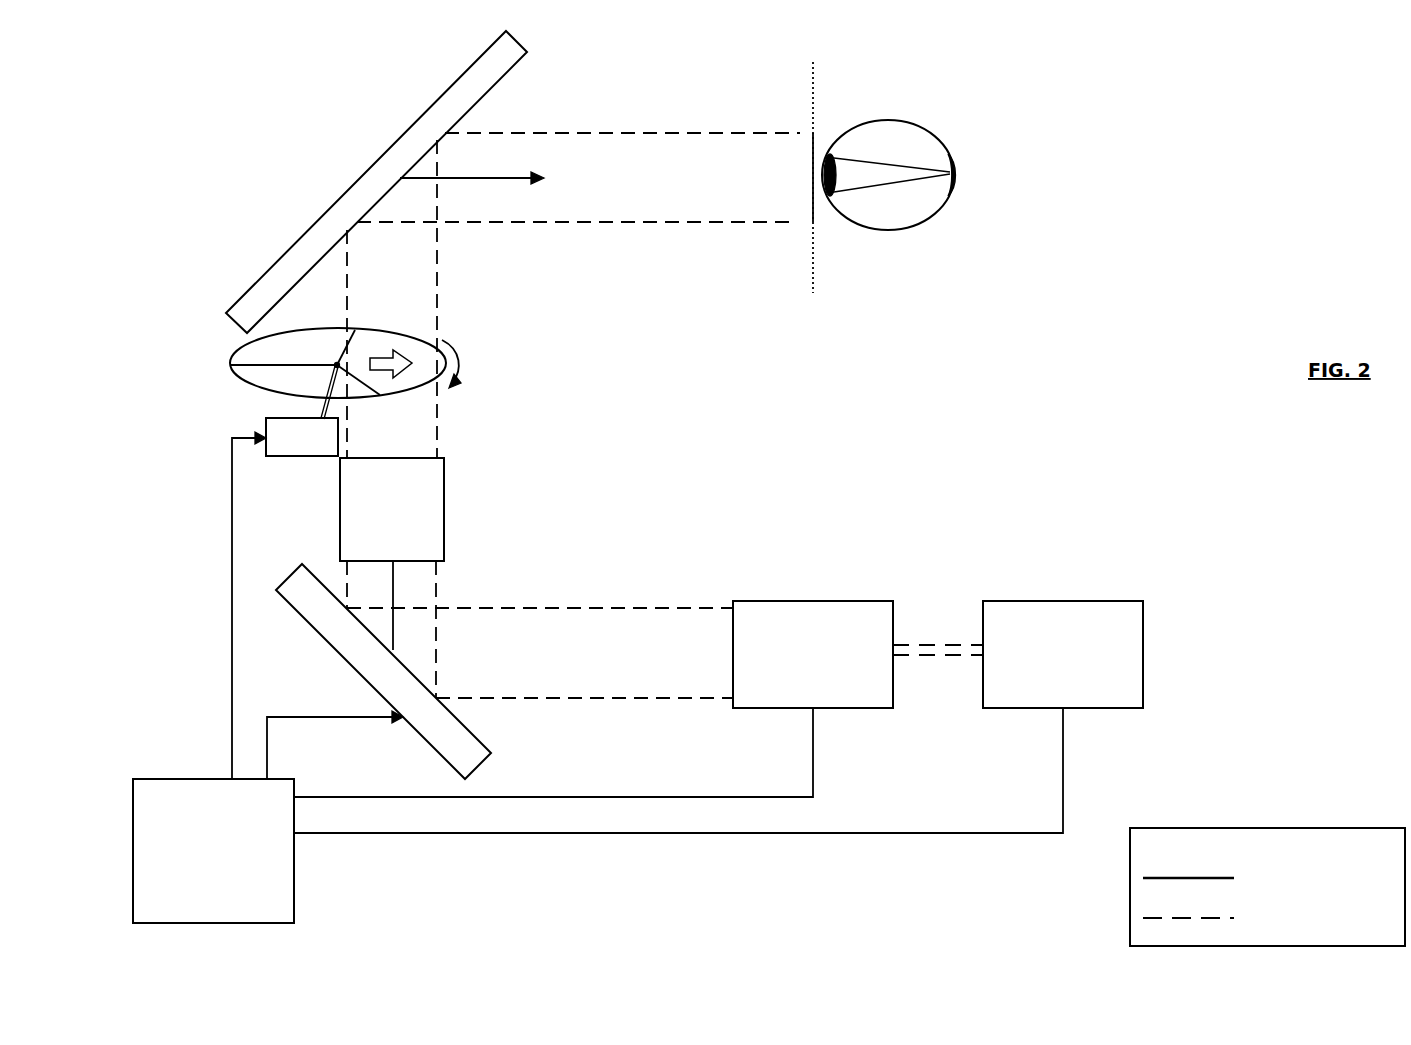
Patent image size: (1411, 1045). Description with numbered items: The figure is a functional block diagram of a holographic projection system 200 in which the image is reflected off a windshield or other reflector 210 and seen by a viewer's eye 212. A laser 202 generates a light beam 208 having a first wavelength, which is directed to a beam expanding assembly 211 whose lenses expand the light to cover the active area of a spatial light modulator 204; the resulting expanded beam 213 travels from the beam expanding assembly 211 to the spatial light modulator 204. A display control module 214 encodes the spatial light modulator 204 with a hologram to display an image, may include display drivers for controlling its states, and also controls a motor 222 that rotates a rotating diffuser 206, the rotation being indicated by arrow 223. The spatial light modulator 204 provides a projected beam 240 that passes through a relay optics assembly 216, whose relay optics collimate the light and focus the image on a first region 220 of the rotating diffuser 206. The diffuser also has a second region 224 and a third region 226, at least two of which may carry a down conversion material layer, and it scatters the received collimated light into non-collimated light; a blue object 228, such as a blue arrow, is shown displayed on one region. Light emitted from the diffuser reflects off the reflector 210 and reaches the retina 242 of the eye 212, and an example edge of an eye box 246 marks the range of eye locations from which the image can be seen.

The holographic projection system 200 is at (1199, 123).
The laser 202 is at (1062, 601).
The spatial light modulator 204 is at (330, 645).
The rotating diffuser 206 is at (232, 366).
The light beam 208 is at (937, 645).
The reflector 210 is at (424, 112).
The beam expanding assembly 211 is at (814, 601).
The eye 212 is at (918, 128).
The expanded beam 213 is at (604, 608).
The display control module 214 is at (162, 779).
The relay optics assembly 216 is at (445, 510).
The first region 220 is at (418, 350).
The motor 222 is at (305, 457).
The arrow 223 is at (456, 358).
The second region 224 is at (248, 352).
The third region 226 is at (267, 377).
The blue object 228 is at (407, 373).
The projected beam 240 is at (438, 597).
The retina 242 is at (953, 158).
The eye box 246 is at (813, 88).